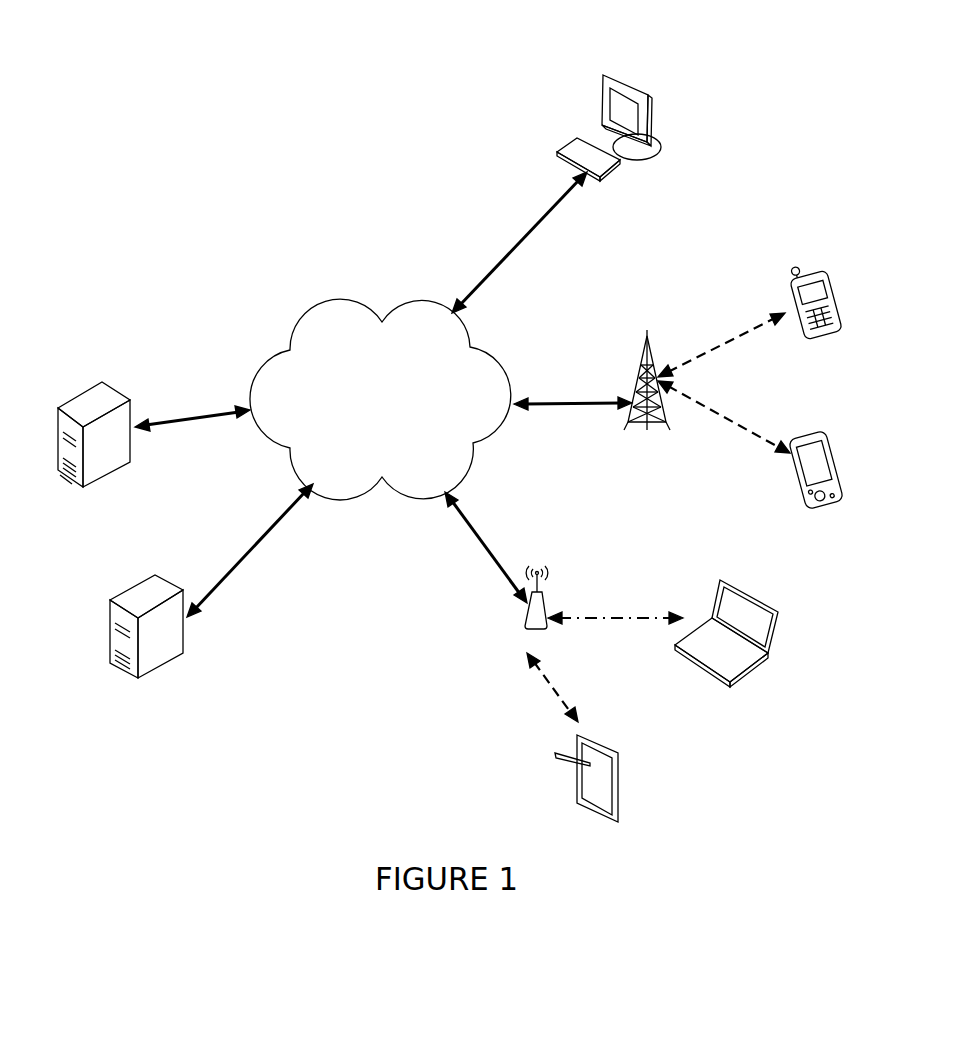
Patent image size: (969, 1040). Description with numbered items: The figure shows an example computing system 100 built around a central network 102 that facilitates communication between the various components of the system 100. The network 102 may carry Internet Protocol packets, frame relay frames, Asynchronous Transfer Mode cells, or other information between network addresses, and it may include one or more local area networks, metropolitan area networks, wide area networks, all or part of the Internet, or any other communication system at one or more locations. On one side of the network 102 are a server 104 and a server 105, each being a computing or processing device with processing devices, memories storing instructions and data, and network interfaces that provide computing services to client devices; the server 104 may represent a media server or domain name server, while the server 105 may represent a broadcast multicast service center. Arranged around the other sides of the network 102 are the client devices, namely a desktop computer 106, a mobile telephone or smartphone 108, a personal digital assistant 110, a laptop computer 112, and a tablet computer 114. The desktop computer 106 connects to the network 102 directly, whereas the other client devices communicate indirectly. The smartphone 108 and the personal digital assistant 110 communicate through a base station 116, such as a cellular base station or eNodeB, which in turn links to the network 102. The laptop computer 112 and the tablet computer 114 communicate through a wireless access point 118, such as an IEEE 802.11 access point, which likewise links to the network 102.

The computing system 100 is at (212, 162).
The network 102 is at (296, 307).
The server 104 is at (73, 402).
The server 105 is at (123, 590).
The desktop computer 106 is at (600, 82).
The mobile telephone or smartphone 108 is at (833, 280).
The personal digital assistant 110 is at (830, 445).
The laptop computer 112 is at (778, 622).
The tablet computer 114 is at (622, 773).
The base station 116 is at (672, 423).
The wireless access point 118 is at (547, 603).